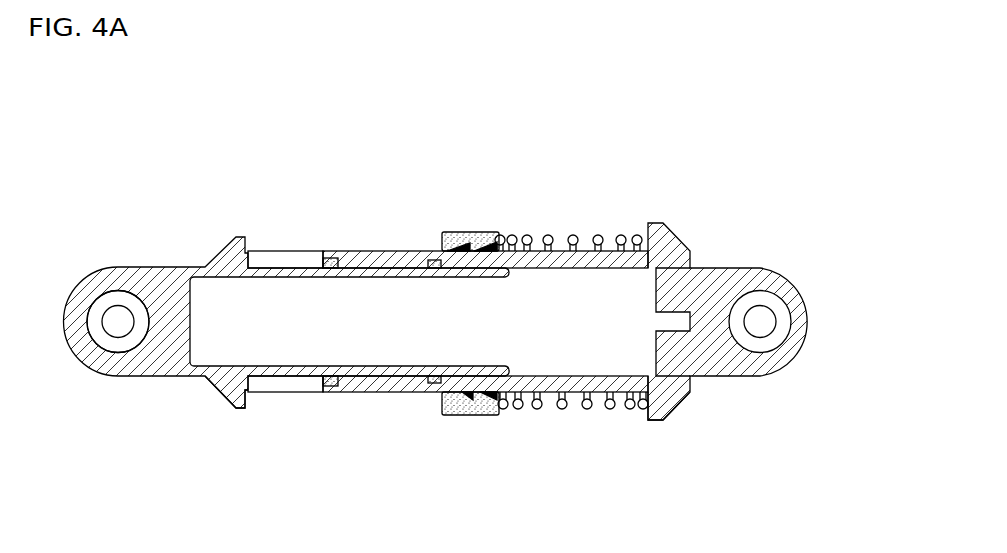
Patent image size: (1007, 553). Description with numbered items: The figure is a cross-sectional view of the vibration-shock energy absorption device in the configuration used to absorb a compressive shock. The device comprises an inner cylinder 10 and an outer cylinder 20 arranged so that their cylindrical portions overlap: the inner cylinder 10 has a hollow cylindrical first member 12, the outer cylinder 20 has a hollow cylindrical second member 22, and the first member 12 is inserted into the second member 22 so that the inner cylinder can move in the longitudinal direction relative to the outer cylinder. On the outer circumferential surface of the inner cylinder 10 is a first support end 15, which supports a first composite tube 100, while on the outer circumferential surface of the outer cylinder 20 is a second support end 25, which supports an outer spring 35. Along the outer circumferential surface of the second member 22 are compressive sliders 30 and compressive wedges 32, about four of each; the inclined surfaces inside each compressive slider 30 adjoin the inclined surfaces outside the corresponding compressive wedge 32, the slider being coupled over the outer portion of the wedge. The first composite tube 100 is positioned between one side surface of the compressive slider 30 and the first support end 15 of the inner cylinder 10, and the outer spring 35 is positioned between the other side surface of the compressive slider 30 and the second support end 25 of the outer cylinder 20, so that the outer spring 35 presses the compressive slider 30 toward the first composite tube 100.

The inner cylinder 10 is at (121, 273).
The first support end 15 is at (225, 385).
The first member 12 is at (316, 384).
The first composite tube 100 is at (300, 251).
The compressive slider 30 is at (455, 232).
The compressive wedge 32 is at (481, 248).
The outer spring 35 is at (594, 236).
The second member 22 is at (548, 384).
The outer cylinder 20 is at (684, 237).
The second support end 25 is at (677, 407).